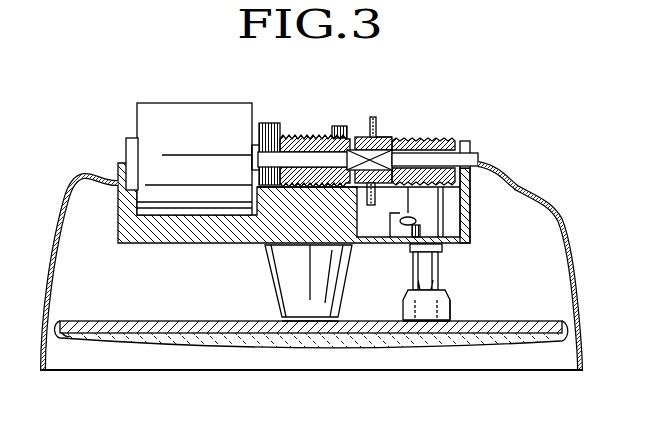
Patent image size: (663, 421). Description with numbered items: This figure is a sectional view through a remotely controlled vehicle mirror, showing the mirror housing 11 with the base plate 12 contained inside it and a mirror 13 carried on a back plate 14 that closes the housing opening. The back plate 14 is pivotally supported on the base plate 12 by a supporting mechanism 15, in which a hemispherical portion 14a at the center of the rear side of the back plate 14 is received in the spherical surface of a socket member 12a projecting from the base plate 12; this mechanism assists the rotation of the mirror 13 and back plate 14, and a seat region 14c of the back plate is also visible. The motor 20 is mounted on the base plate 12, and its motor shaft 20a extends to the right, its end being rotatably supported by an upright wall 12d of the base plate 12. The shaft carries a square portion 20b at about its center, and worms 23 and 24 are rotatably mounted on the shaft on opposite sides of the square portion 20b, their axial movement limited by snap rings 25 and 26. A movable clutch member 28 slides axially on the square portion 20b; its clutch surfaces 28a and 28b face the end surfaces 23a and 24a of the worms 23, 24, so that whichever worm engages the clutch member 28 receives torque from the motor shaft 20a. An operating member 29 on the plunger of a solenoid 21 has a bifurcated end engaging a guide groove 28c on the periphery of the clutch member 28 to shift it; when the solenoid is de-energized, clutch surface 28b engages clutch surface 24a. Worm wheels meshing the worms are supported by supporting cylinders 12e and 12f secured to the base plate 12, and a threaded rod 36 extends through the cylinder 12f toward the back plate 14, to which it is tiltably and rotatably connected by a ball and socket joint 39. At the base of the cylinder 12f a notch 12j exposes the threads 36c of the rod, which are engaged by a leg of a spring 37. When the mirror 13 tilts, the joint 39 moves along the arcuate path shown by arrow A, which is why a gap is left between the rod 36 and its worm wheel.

The mirror housing 11 is at (577, 262).
The base plate 12 is at (118, 243).
The socket member 12a is at (282, 297).
The upright wall 12d is at (470, 145).
The supporting cylinder 12e is at (393, 213).
The supporting cylinder 12f is at (446, 230).
The notch 12j is at (444, 207).
The mirror 13 is at (174, 347).
The back plate 14 is at (160, 320).
The hemispherical portion 14a is at (308, 318).
The platen seat 14c is at (438, 318).
The supporting mechanism 15 is at (258, 269).
The motor 20 is at (172, 104).
The motor shaft 20a is at (270, 157).
The square portion 20b is at (307, 209).
The solenoid 21 is at (292, 127).
The worm 23 is at (311, 127).
The end surface 23a is at (345, 137).
The worm 24 is at (443, 142).
The clutch surface 24a is at (408, 140).
The snap ring 25 is at (256, 164).
The snap ring 26 is at (480, 166).
The movable clutch member 28 is at (357, 140).
The clutch surface 28a is at (354, 140).
The clutch surface 28b is at (393, 205).
The guide groove 28c is at (388, 147).
The operating member 29 is at (381, 137).
The threaded rod 36 is at (440, 272).
The threads 36c is at (442, 249).
The spring 37 is at (414, 220).
The ball and socket joint 39 is at (452, 301).
The arrow A is at (419, 353).